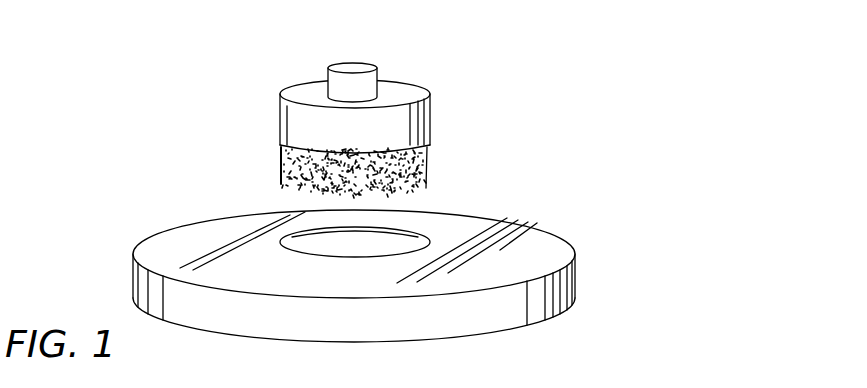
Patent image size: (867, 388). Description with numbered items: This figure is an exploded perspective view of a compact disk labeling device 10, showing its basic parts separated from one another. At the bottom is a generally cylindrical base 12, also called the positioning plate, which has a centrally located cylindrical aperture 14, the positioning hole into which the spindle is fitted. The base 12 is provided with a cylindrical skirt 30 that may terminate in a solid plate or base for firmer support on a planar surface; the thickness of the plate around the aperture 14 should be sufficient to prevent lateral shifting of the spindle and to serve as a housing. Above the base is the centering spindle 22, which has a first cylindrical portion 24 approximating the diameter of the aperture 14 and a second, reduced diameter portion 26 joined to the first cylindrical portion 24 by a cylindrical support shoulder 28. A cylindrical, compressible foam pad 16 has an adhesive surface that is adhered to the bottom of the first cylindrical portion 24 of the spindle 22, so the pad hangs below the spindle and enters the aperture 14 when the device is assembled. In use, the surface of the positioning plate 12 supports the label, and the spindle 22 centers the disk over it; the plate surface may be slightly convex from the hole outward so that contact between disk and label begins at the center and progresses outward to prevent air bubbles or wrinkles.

The labeling device 10 is at (389, 246).
The base 12 is at (190, 238).
The cylindrical aperture 14 is at (393, 238).
The compressible foam pad 16 is at (425, 165).
The centering spindle 22 is at (393, 107).
The first cylindrical portion 24 is at (293, 128).
The second, reduced diameter portion 26 is at (365, 83).
The cylindrical support shoulder 28 is at (318, 88).
The cylindrical skirt 30 is at (533, 297).